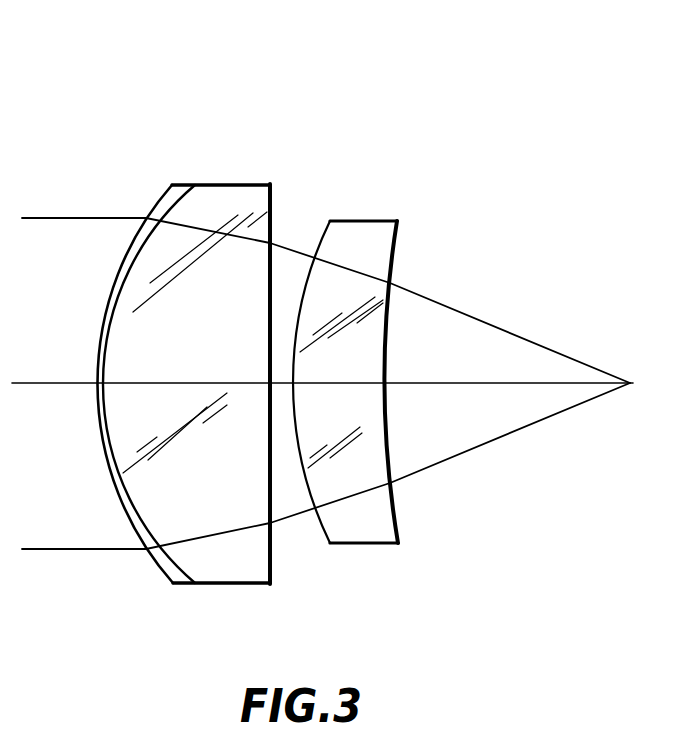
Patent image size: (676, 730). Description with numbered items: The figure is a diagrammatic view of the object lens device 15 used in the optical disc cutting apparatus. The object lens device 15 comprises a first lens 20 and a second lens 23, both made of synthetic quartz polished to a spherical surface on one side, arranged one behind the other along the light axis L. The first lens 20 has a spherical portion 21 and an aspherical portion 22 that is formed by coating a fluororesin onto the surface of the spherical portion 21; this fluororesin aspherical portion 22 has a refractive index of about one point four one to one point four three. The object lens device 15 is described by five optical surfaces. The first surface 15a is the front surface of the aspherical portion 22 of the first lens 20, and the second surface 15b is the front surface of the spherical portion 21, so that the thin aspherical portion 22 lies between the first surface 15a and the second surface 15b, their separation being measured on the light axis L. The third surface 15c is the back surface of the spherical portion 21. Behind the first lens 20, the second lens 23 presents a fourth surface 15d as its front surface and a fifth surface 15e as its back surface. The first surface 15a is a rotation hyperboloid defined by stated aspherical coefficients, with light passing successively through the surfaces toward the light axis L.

The object lens device 15 is at (292, 108).
The first lens 20 is at (228, 96).
The spherical portion 21 is at (223, 185).
The aspherical portion 22 is at (176, 185).
The second lens 23 is at (369, 221).
The first surface 15a is at (97, 347).
The second surface 15b is at (105, 338).
The third surface 15c is at (270, 460).
The fourth surface 15d is at (303, 488).
The fifth surface 15e is at (388, 426).
The light axis L is at (28, 383).